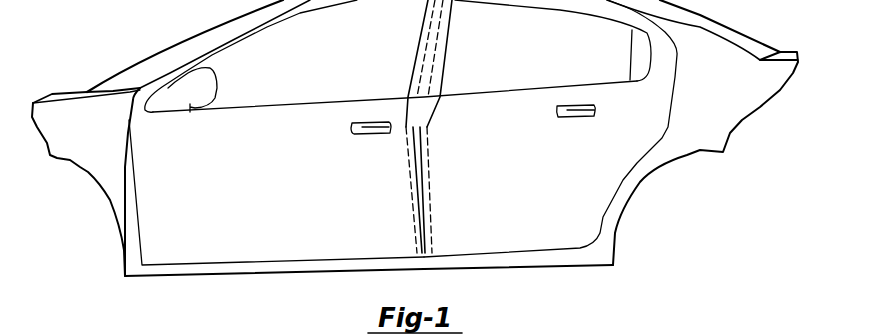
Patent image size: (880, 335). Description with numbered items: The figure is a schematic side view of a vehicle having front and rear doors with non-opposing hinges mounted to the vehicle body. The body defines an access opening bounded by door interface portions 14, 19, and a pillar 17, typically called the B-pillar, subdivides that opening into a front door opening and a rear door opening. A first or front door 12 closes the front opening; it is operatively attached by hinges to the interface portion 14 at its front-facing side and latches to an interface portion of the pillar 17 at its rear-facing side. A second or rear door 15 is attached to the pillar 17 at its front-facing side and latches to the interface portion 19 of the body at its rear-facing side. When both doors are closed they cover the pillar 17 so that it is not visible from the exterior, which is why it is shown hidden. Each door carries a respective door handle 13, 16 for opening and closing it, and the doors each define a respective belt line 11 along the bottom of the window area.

The belt line 11 is at (305, 107).
The front door 12 is at (247, 242).
The door handle 13 is at (365, 128).
The door interface portion 14 is at (125, 165).
The rear door 15 is at (543, 232).
The door handle 16 is at (585, 118).
The pillar 17 is at (408, 182).
The interface portion 19 is at (662, 138).